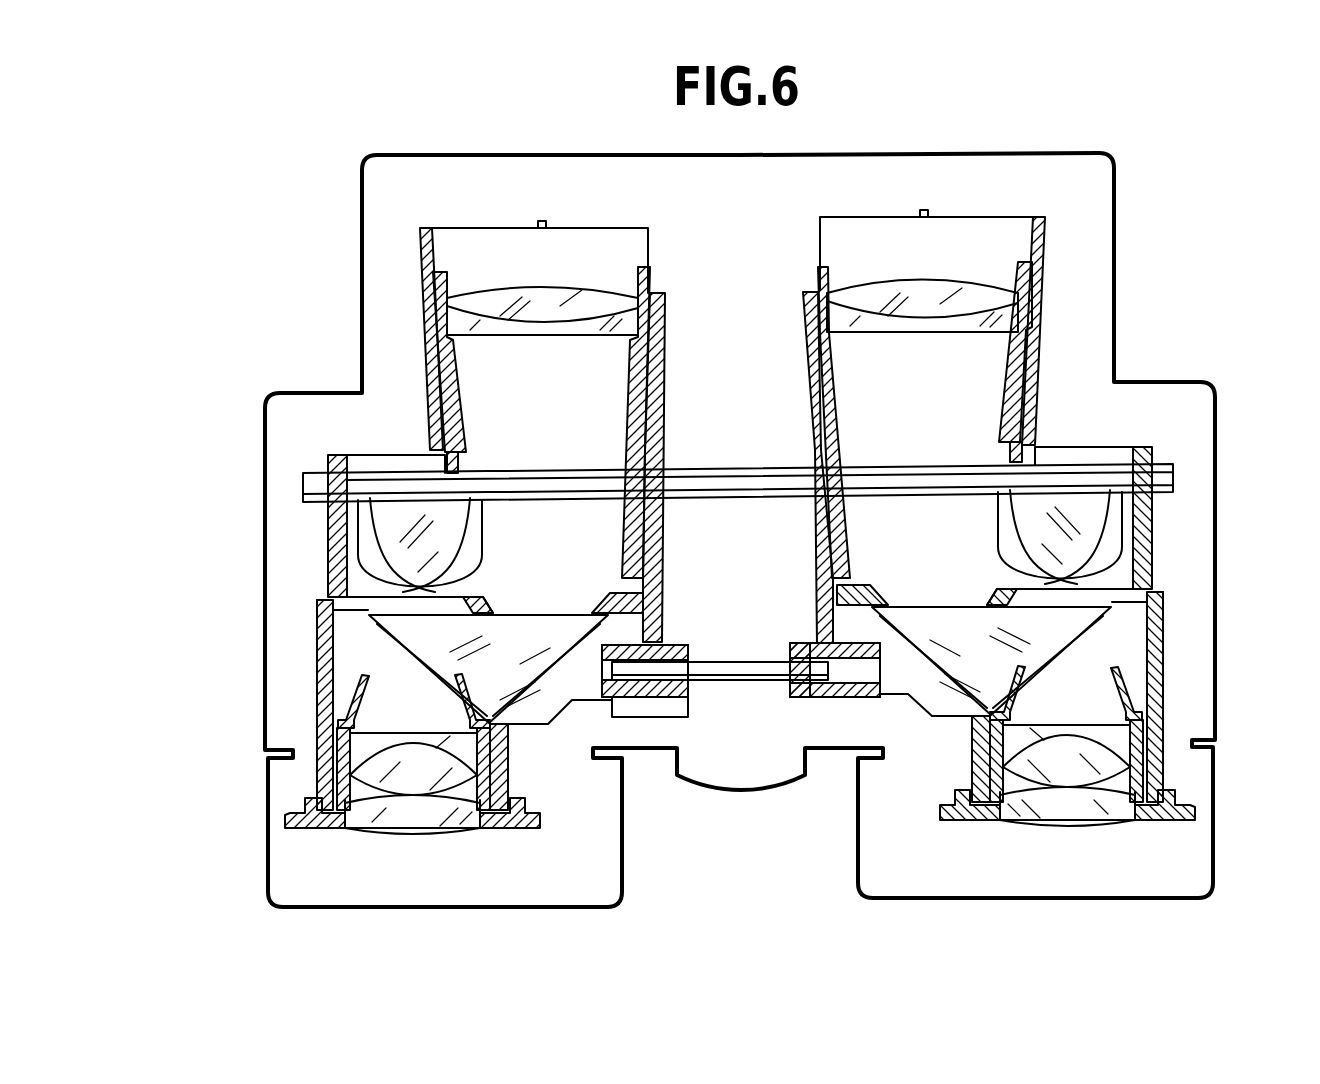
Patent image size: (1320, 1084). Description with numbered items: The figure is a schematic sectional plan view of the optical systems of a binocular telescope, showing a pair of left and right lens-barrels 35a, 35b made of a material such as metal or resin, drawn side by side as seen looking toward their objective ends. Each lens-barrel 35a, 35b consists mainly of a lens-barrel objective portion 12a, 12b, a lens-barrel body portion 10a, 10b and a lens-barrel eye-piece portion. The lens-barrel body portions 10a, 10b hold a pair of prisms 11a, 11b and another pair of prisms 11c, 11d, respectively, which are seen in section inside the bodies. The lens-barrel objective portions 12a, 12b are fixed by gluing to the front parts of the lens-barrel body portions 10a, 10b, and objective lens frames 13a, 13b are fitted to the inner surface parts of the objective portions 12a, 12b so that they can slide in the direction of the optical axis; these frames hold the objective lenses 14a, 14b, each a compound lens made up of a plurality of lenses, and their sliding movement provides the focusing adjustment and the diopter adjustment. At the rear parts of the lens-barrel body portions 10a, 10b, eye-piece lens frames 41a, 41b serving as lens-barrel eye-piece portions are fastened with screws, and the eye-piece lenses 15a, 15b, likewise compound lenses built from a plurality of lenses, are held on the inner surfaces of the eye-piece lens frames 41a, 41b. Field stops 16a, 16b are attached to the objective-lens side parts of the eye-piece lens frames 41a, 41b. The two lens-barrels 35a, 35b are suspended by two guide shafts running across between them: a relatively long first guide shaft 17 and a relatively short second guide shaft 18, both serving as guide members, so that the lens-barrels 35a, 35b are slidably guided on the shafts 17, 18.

The lens-barrel body portion 10a is at (1150, 444).
The lens-barrel body portion 10b is at (332, 557).
The prism 11a is at (1077, 532).
The prism 11b is at (1072, 633).
The prism 11c is at (380, 523).
The prism 11d is at (405, 640).
The lens-barrel objective portion 12a is at (1040, 258).
The lens-barrel objective portion 12b is at (424, 252).
The objective lens frame 13a is at (1037, 308).
The objective lens frame 13b is at (435, 306).
The objective lens 14a is at (972, 290).
The objective lens 14b is at (463, 312).
The eye-piece lens 15a is at (1117, 753).
The eye-piece lens 15b is at (370, 768).
The field stop 16a is at (1130, 688).
The field stop 16b is at (357, 697).
The first guide shaft 17 is at (1077, 478).
The second guide shaft 18 is at (733, 680).
The lens-barrel 35a is at (1163, 560).
The lens-barrel 35b is at (312, 626).
The eye-piece lens frame 41a is at (1165, 797).
The eye-piece lens frame 41b is at (318, 812).